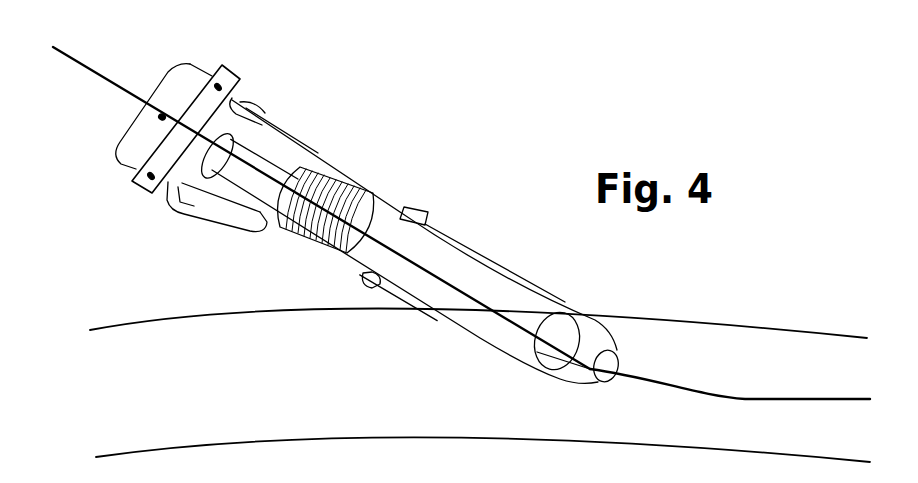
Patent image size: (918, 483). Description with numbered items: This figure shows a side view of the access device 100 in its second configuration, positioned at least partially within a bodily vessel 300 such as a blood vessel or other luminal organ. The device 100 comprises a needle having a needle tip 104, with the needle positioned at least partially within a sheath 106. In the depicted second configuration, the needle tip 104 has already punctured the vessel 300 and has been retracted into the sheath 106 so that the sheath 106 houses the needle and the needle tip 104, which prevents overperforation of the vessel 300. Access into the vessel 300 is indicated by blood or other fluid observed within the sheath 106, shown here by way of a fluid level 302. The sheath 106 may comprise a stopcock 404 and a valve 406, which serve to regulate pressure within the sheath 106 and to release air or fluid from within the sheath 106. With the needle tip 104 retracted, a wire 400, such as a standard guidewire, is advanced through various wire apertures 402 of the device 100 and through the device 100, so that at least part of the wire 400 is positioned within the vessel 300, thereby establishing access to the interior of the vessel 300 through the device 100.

The device 100 is at (392, 146).
The needle tip 104 is at (574, 323).
The sheath 106 is at (440, 230).
The vessel 300 is at (727, 318).
The fluid level 302 is at (463, 250).
The wire 400 is at (743, 392).
The wire apertures 402 is at (147, 103).
The stopcock 404 is at (418, 207).
The valve 406 is at (365, 279).